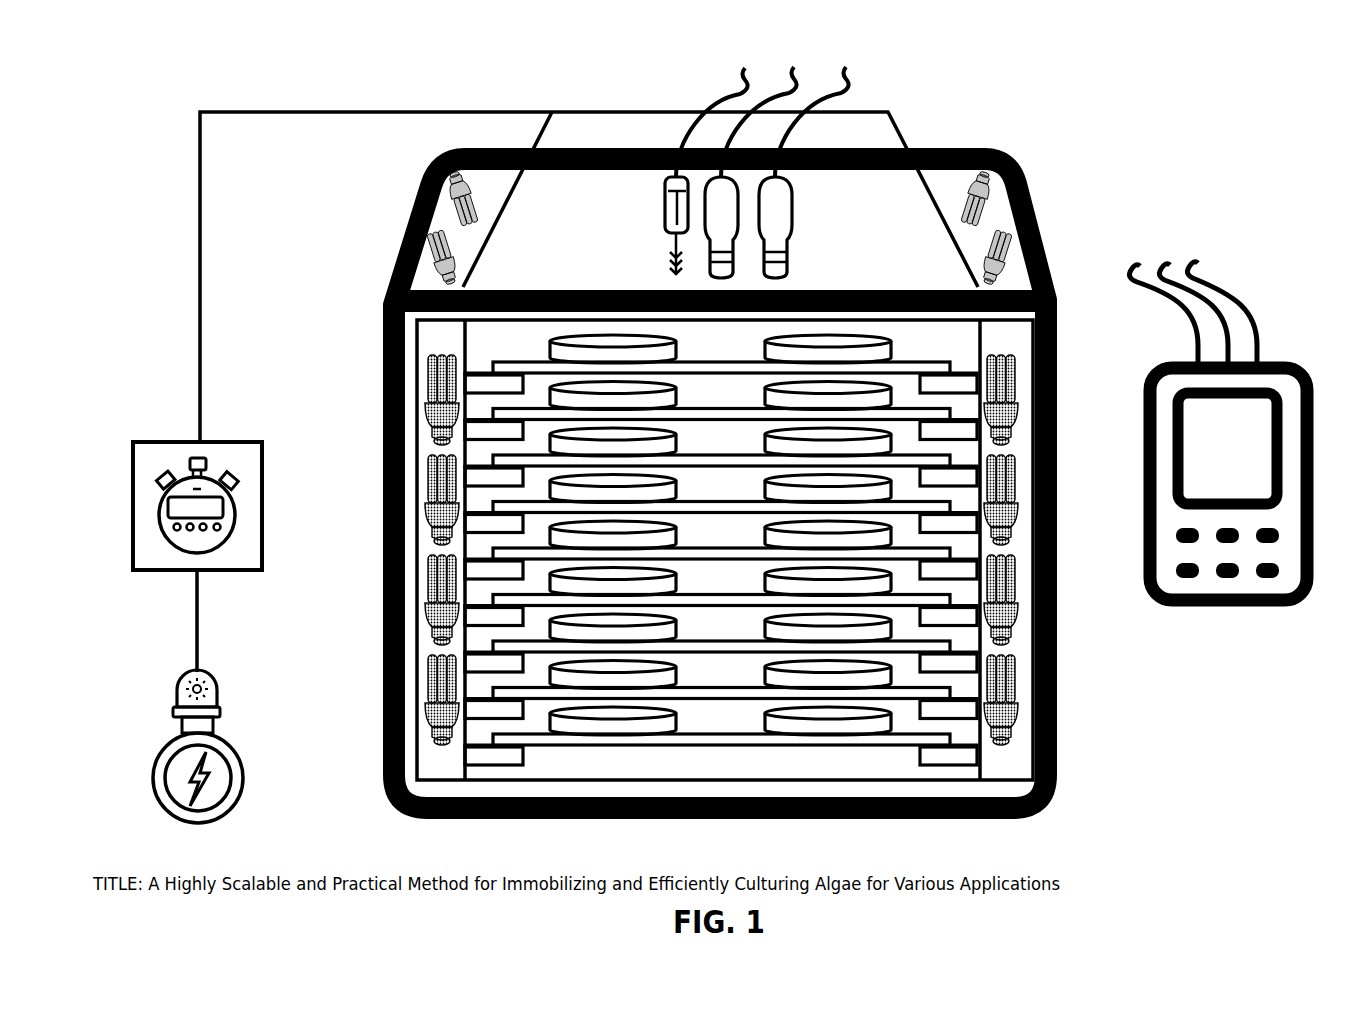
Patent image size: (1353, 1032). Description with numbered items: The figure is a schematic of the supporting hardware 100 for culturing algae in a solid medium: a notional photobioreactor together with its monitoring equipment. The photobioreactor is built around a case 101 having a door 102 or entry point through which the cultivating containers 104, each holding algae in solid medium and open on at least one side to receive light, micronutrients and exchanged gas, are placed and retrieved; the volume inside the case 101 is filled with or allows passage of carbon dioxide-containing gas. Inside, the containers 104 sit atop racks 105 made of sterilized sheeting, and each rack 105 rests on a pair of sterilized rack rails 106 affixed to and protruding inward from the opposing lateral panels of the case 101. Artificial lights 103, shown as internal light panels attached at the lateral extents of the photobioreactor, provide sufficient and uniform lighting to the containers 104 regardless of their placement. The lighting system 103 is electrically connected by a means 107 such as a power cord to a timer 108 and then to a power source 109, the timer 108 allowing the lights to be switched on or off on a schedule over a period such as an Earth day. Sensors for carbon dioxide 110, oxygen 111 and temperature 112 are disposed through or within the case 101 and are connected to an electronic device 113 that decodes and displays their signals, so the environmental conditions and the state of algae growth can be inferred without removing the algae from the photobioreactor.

The supporting hardware 100 is at (365, 57).
The case 101 is at (1010, 163).
The door 102 is at (487, 782).
The artificial lights 103 is at (443, 225).
The cultivating containers 104 is at (832, 353).
The rack 105 is at (720, 737).
The rack rails 106 is at (955, 750).
The electrical connection means 107 is at (200, 167).
The timer 108 is at (218, 443).
The power source 109 is at (162, 747).
The carbon dioxide sensor 110 is at (720, 243).
The oxygen sensor 111 is at (795, 203).
The temperature sensor 112 is at (664, 192).
The electronic device 113 is at (1250, 578).